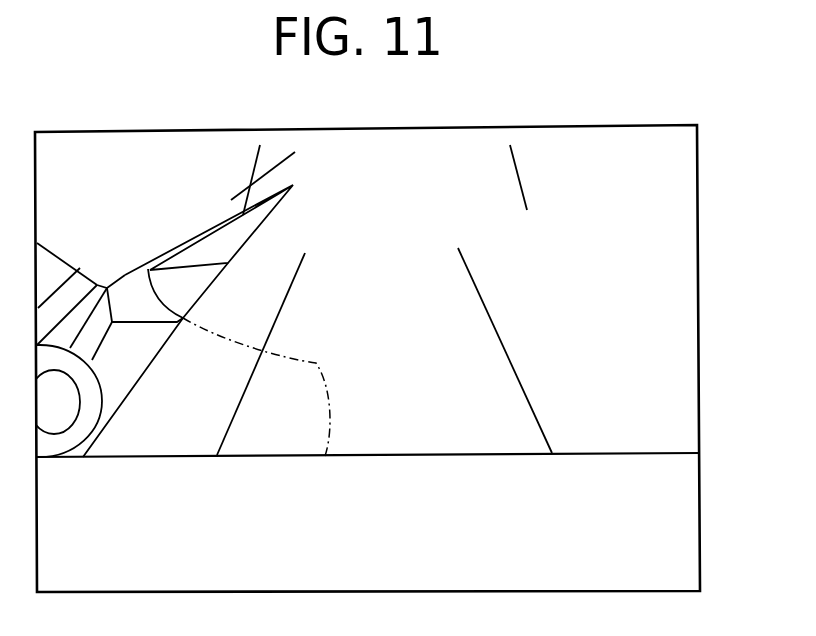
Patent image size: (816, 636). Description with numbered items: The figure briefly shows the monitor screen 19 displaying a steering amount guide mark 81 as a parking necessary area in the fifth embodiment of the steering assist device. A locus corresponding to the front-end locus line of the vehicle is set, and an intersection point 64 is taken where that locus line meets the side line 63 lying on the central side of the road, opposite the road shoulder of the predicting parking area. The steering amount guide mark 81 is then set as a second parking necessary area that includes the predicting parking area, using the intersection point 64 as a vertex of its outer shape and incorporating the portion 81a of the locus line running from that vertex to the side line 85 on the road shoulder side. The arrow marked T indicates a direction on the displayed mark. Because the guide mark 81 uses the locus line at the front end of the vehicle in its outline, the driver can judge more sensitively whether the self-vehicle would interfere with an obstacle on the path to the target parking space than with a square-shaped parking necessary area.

The screen 19 is at (698, 265).
The side line 63 is at (211, 285).
The intersection point 64 is at (180, 320).
The steering amount guide mark 81 is at (150, 286).
The portion of the locus line 81a is at (158, 298).
The side line 85 is at (188, 241).
The tool feed direction T is at (224, 237).